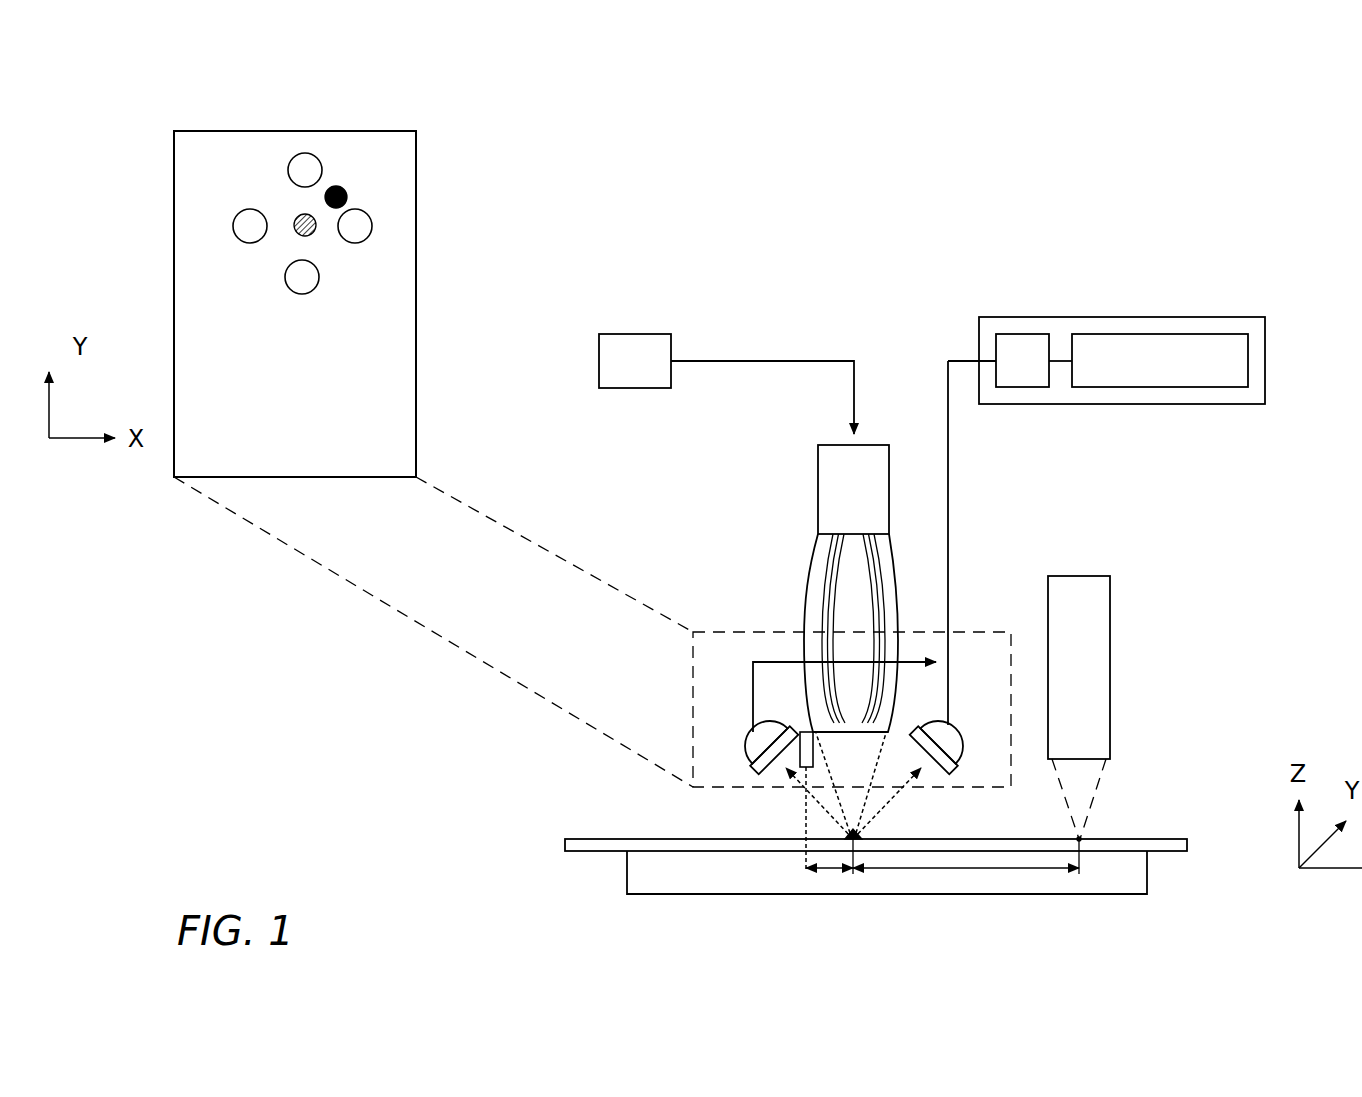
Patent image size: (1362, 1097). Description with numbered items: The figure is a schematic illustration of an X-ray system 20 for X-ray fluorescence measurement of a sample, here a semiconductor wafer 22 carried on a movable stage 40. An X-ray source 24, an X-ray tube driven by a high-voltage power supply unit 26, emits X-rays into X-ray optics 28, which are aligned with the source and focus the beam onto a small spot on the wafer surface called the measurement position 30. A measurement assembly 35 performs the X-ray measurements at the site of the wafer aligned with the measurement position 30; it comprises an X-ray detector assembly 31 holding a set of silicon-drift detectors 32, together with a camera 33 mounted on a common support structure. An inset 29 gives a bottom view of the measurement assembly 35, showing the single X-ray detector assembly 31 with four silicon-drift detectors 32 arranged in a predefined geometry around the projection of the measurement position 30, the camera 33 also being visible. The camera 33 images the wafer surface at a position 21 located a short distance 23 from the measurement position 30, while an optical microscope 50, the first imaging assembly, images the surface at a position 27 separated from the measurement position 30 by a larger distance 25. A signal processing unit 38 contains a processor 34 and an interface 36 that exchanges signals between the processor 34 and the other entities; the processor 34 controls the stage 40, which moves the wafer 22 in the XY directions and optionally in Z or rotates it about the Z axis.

The X-ray system 20 is at (752, 282).
The position 21 is at (805, 840).
The wafer 22 is at (1165, 839).
The distance 23 is at (830, 872).
The X-ray source 24 is at (818, 489).
The distance 25 is at (1000, 872).
The high-voltage power supply unit 26 is at (634, 334).
The position 27 is at (1075, 840).
The X-ray optics 28 is at (805, 600).
The inset 29 is at (174, 272).
The measurement position 30 is at (312, 234).
The X-ray detector assembly 31 is at (210, 186).
The silicon-drift detectors 32 is at (305, 153).
The camera 33 is at (338, 186).
The processor 34 is at (1163, 334).
The measurement assembly 35 is at (156, 119).
The interface 36 is at (1022, 334).
The signal processing unit 38 is at (1265, 361).
The movable stage 40 is at (1147, 868).
The optical microscope 50 is at (1079, 707).